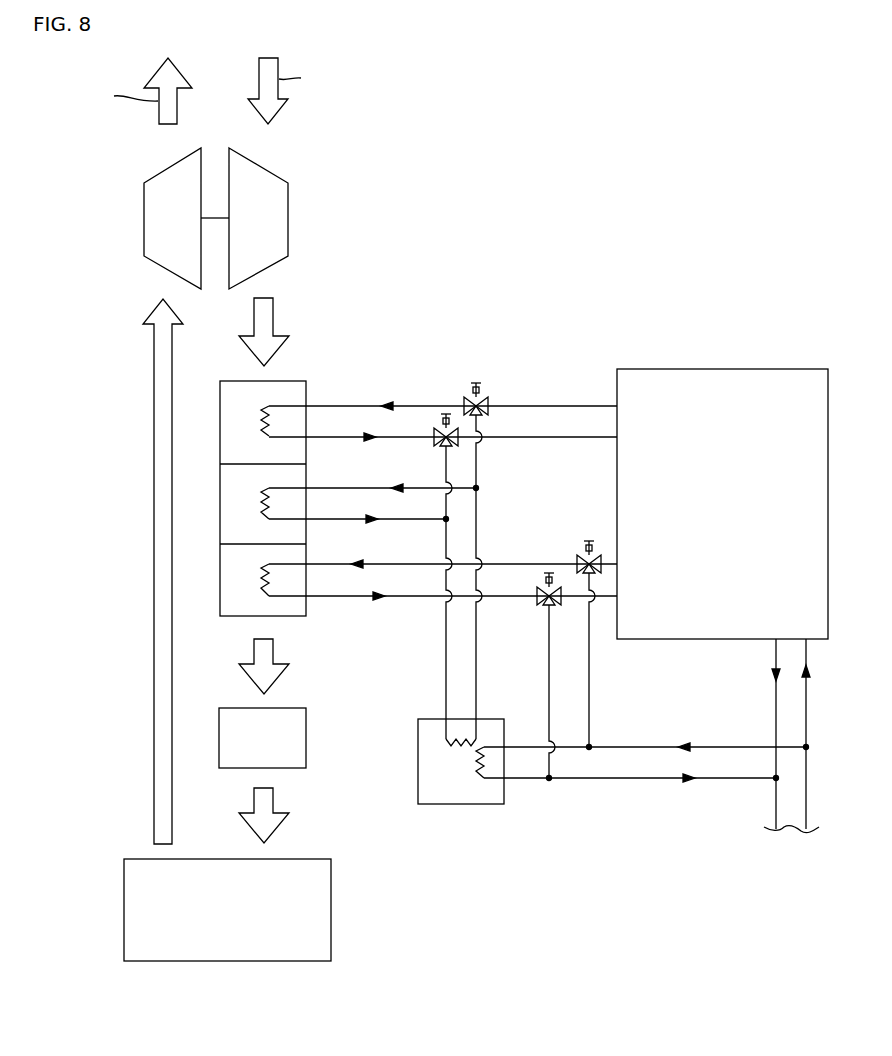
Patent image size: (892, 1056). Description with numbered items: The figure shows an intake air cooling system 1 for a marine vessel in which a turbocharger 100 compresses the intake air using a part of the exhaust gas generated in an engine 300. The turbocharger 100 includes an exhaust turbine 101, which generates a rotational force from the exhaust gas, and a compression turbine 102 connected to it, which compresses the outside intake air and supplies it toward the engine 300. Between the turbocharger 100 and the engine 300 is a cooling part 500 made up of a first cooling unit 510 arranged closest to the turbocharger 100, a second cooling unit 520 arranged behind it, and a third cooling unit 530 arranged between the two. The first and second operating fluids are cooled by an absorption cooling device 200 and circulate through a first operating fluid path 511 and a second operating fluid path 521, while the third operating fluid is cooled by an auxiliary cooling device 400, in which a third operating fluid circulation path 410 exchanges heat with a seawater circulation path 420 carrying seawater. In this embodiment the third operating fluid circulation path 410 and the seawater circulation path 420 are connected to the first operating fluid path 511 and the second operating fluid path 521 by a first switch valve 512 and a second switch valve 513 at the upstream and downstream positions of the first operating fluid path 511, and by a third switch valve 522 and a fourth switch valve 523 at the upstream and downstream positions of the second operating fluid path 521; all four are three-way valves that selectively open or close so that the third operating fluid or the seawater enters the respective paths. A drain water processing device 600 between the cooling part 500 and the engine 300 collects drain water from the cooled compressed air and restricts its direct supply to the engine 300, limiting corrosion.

The intake air cooling system 1 is at (414, 152).
The turbocharger 100 is at (124, 213).
The exhaust turbine 101 is at (150, 175).
The compression turbine 102 is at (277, 175).
The absorption cooling device 200 is at (736, 348).
The engine 300 is at (292, 962).
The auxiliary cooling device 400 is at (475, 805).
The third operating fluid circulation path 410 is at (475, 668).
The seawater circulation path 420 is at (610, 746).
The cooling part 500 is at (200, 500).
The first cooling unit 510 is at (287, 393).
The first operating fluid path 511 is at (414, 386).
The first switch valve 512 is at (487, 400).
The second switch valve 513 is at (455, 445).
The second cooling unit 520 is at (292, 605).
The second operating fluid path 521 is at (371, 622).
The third switch valve 522 is at (581, 557).
The fourth switch valve 523 is at (540, 604).
The third cooling unit 530 is at (290, 477).
The drain water processing device 600 is at (305, 737).